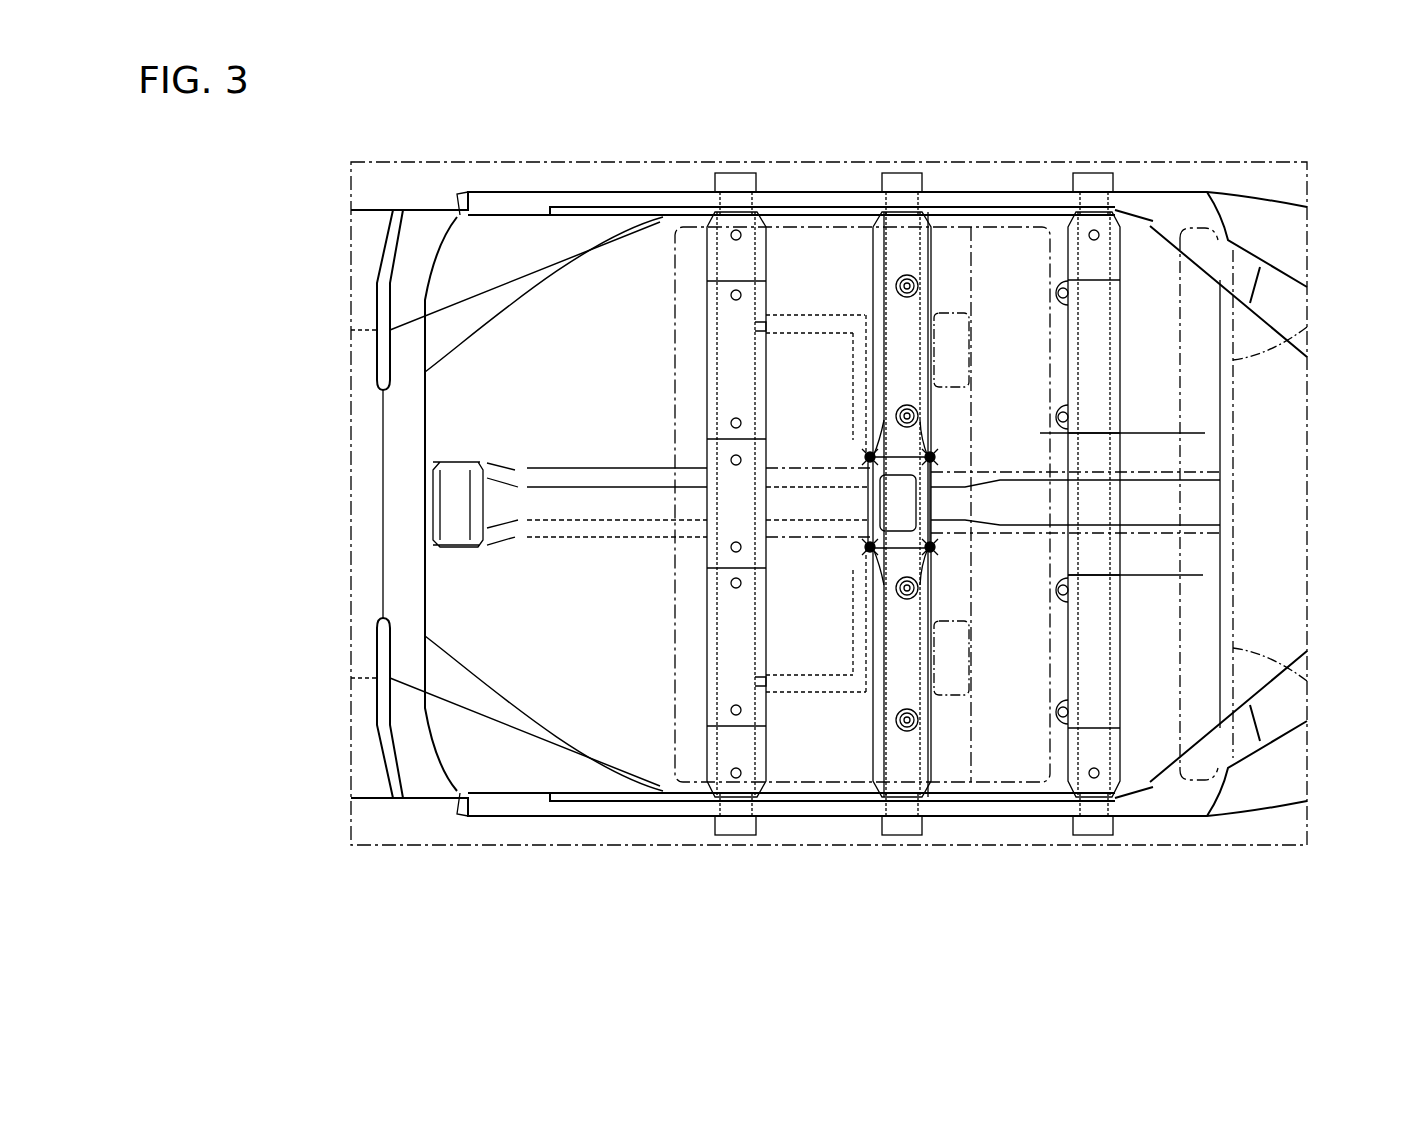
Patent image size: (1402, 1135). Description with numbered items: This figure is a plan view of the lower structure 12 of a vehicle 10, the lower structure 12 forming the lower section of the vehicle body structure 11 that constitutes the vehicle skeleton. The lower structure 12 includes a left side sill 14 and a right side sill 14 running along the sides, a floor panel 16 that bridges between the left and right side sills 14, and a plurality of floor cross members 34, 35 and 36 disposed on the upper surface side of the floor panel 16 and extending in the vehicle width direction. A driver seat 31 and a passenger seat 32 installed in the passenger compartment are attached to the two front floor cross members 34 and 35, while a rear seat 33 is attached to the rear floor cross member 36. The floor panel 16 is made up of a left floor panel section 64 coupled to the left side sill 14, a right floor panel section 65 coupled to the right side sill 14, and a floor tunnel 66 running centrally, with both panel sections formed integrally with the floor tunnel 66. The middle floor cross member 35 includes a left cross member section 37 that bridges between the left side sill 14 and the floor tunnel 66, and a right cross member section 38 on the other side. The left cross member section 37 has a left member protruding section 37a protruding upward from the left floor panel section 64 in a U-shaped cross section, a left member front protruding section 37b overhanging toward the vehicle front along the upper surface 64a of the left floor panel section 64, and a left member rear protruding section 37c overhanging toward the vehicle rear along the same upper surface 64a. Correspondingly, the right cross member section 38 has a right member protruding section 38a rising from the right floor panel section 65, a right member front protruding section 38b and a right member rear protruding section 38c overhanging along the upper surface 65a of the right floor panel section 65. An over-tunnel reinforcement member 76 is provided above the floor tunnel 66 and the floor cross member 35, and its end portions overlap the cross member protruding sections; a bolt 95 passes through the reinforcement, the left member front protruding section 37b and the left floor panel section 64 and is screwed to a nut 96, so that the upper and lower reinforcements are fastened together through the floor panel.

The vehicle 10 is at (582, 150).
The vehicle body structure 11 is at (698, 185).
The lower structure 12 is at (798, 185).
The side sill 14 is at (978, 190).
The floor panel 16 is at (258, 377).
The driver seat 31 is at (675, 273).
The passenger seat 32 is at (675, 590).
The rear seat 33 is at (1235, 355).
The floor cross member 34 is at (705, 638).
The floor cross member 35 is at (1347, 380).
The floor cross member 36 is at (1110, 655).
The left cross member section 37 is at (1050, 500).
The left member protruding section 37a is at (895, 695).
The left member front protruding section 37b is at (877, 670).
The left member rear protruding section 37c is at (925, 715).
The right cross member section 38 is at (938, 340).
The right member protruding section 38a is at (908, 330).
The right member front protruding section 38b is at (877, 278).
The right member rear protruding section 38c is at (934, 303).
The left floor panel section 64 is at (510, 617).
The upper surface of left floor panel section 64a is at (584, 662).
The right floor panel section 65 is at (515, 387).
The upper surface of right floor panel section 65a is at (595, 308).
The floor tunnel 66 is at (580, 505).
The over-tunnel reinforcement member 76 is at (890, 500).
The bolt 95 is at (868, 457).
The nut 96 is at (868, 457).